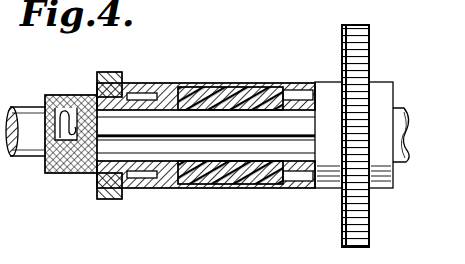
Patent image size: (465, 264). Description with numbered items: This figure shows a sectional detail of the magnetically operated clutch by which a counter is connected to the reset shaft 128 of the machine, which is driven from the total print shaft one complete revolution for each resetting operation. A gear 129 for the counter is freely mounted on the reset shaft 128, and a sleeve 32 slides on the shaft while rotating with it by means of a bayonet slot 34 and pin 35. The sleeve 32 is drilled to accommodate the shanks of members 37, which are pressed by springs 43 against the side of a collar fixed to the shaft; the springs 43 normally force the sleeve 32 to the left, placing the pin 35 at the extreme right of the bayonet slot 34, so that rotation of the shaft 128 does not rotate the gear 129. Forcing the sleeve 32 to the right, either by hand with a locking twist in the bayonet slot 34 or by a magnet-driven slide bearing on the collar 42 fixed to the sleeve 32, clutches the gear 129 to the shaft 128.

The reset shaft 128 is at (37, 160).
The bayonet slot 34 is at (46, 112).
The pin 35 is at (78, 134).
The sleeve 32 is at (170, 85).
The springs 43 is at (221, 88).
The collar 42 is at (107, 194).
The members 37 is at (297, 93).
The gear 129 is at (371, 47).